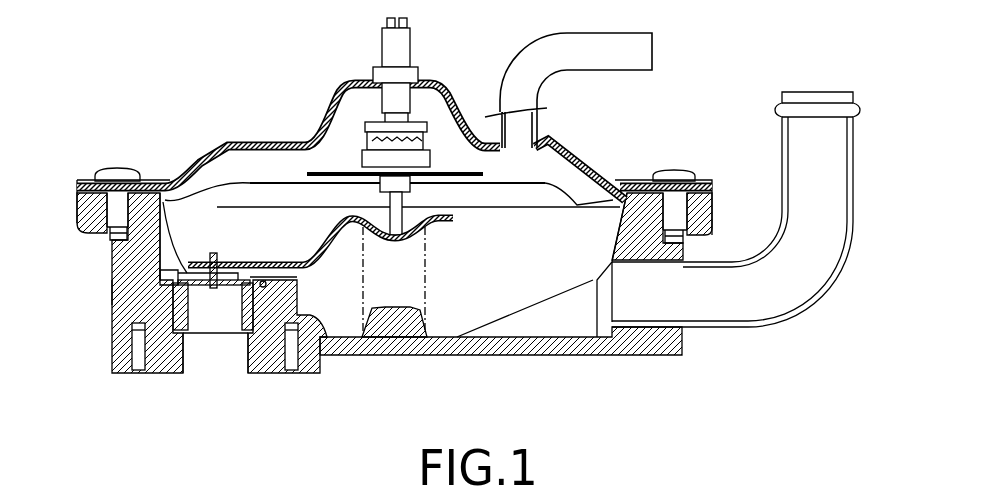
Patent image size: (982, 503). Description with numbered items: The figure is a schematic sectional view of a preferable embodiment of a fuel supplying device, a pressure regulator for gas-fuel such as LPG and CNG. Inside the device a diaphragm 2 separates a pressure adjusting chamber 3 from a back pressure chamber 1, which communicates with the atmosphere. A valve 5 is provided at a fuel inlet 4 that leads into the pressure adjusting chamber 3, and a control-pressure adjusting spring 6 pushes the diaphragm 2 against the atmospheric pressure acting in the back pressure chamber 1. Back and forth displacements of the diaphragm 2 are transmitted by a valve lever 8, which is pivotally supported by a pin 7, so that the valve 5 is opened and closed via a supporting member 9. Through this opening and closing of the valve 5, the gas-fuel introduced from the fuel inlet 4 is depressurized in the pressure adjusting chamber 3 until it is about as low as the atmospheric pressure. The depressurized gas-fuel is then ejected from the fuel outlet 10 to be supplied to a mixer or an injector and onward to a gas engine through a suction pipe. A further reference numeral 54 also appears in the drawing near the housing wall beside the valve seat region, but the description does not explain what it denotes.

The back pressure chamber 1 is at (340, 147).
The diaphragm 2 is at (305, 173).
The pressure adjusting chamber 3 is at (560, 264).
The fuel inlet 4 is at (217, 363).
The valve 5 is at (210, 250).
The control-pressure adjusting spring 6 is at (428, 278).
The pin 7 is at (263, 282).
The valve lever 8 is at (307, 253).
The supporting member 9 is at (153, 278).
The fuel outlet 10 is at (733, 307).
The housing wall 54 is at (115, 292).